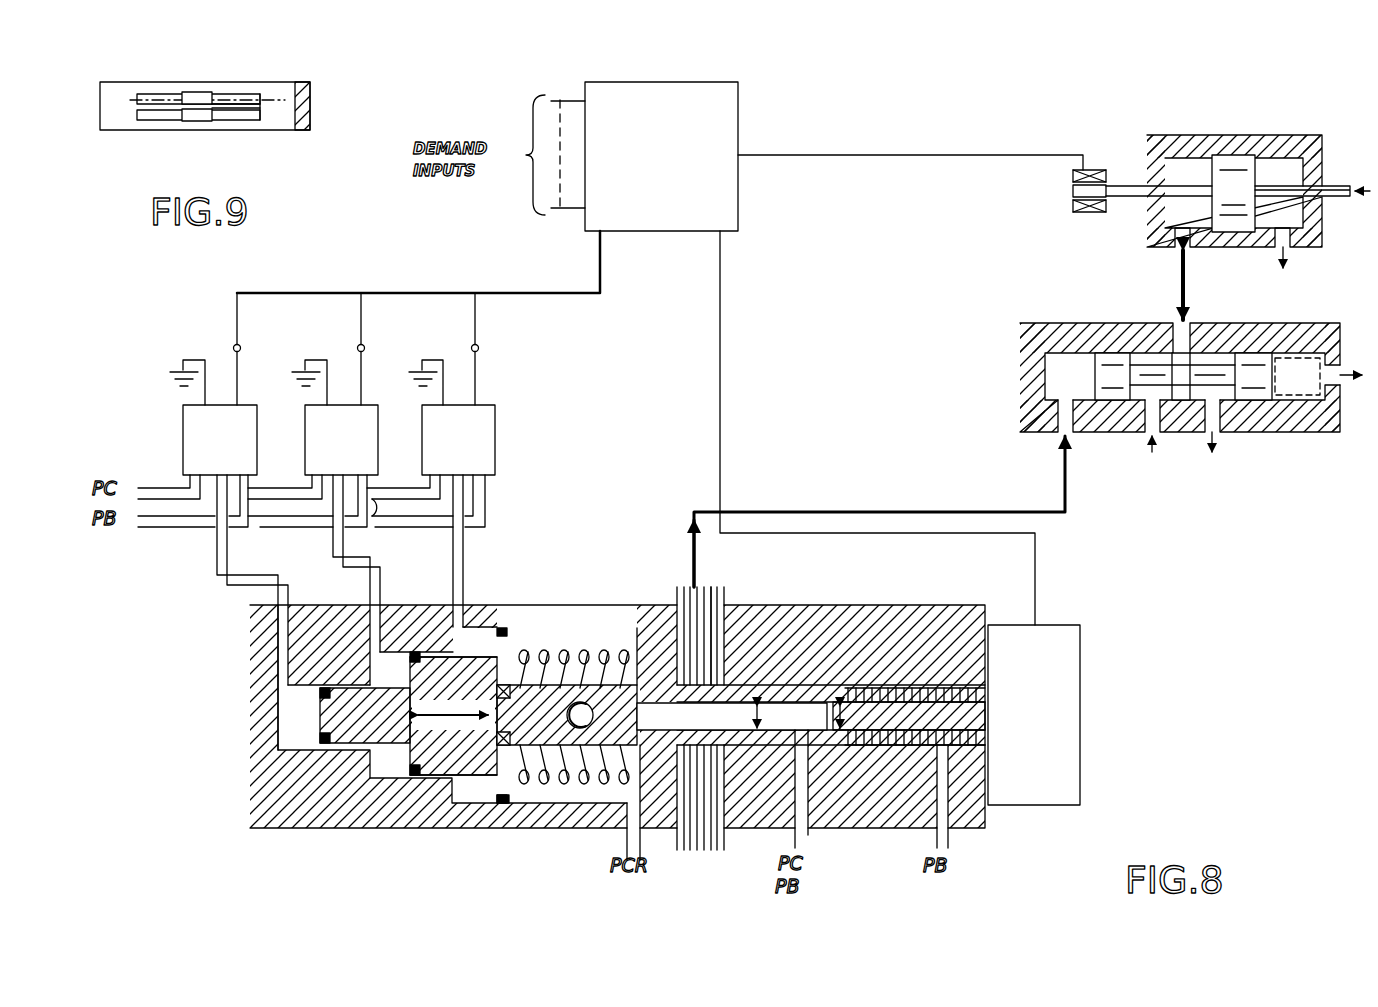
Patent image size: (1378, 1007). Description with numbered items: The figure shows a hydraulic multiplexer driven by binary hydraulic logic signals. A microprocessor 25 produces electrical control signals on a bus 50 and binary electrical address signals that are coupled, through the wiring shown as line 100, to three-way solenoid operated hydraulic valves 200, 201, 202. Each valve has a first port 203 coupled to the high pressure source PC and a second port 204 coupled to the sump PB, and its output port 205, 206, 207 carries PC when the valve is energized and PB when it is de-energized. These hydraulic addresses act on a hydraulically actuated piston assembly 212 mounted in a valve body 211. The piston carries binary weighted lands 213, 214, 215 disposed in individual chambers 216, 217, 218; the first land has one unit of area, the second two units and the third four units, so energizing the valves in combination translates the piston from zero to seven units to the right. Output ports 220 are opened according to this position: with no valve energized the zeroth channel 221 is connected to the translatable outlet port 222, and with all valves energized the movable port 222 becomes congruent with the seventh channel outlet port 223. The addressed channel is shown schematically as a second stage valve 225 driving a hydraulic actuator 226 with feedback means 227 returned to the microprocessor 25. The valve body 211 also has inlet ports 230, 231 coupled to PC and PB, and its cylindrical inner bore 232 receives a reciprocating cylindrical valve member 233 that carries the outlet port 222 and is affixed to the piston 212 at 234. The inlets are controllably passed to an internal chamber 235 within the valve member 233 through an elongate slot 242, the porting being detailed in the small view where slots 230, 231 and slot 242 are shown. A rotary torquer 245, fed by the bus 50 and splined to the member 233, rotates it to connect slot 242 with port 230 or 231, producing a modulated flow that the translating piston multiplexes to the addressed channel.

In FIG. 8, the microprocessor 25 is at (722, 82).
In FIG. 8, the control bus 100 is at (503, 293).
In FIG. 8, the bus 50 is at (723, 347).
In FIG. 8, the three-way solenoid operated hydraulic valve 200 is at (183, 405).
In FIG. 8, the three-way solenoid operated hydraulic valve 201 is at (305, 405).
In FIG. 8, the three-way solenoid operated hydraulic valve 202 is at (495, 405).
In FIG. 8, the first port 203 is at (190, 482).
In FIG. 8, the second port 204 is at (485, 480).
In FIG. 8, the output port 205 is at (213, 510).
In FIG. 8, the output port 206 is at (332, 515).
In FIG. 8, the output port 207 is at (452, 515).
In FIG. 8, the valve body 211 is at (255, 818).
In FIG. 8, the hydraulically actuated piston assembly 212 is at (470, 800).
In FIG. 8, the binary weighted land 213 is at (318, 697).
In FIG. 8, the binary weighted land 214 is at (405, 652).
In FIG. 8, the binary weighted land 215 is at (478, 642).
In FIG. 8, the chamber 216 is at (295, 718).
In FIG. 8, the chamber 217 is at (382, 665).
In FIG. 8, the chamber 218 is at (512, 628).
In FIG. 8, the output ports 220 is at (768, 590).
In FIG. 8, the zeroth channel 221 is at (680, 587).
In FIG. 8, the translatable outlet port 222 is at (811, 716).
In FIG. 8, the seventh channel outlet port 223 is at (712, 587).
In FIG. 8, the second stage valve 225 is at (1105, 323).
In FIG. 8, the hydraulic actuator 226 is at (1218, 138).
In FIG. 8, the feedback means 227 is at (1073, 205).
In FIG. 8, the inlet port 230 is at (800, 742).
In FIG. 9, the inlet port 230 is at (188, 92).
In FIG. 8, the inlet port 231 is at (854, 895).
In FIG. 9, the inlet port 231 is at (197, 120).
In FIG. 8, the inner bore 232 is at (786, 742).
In FIG. 8, the cylindrical valve member 233 is at (597, 650).
In FIG. 9, the cylindrical valve member 233 is at (312, 97).
In FIG. 8, the affixation point 234 is at (510, 800).
In FIG. 8, the internal chamber 235 is at (778, 700).
In FIG. 9, the internal chamber 235 is at (246, 128).
In FIG. 8, the elongate slot 242 is at (810, 742).
In FIG. 9, the elongate slot 242 is at (255, 100).
In FIG. 8, the rotary torquer 245 is at (1080, 770).